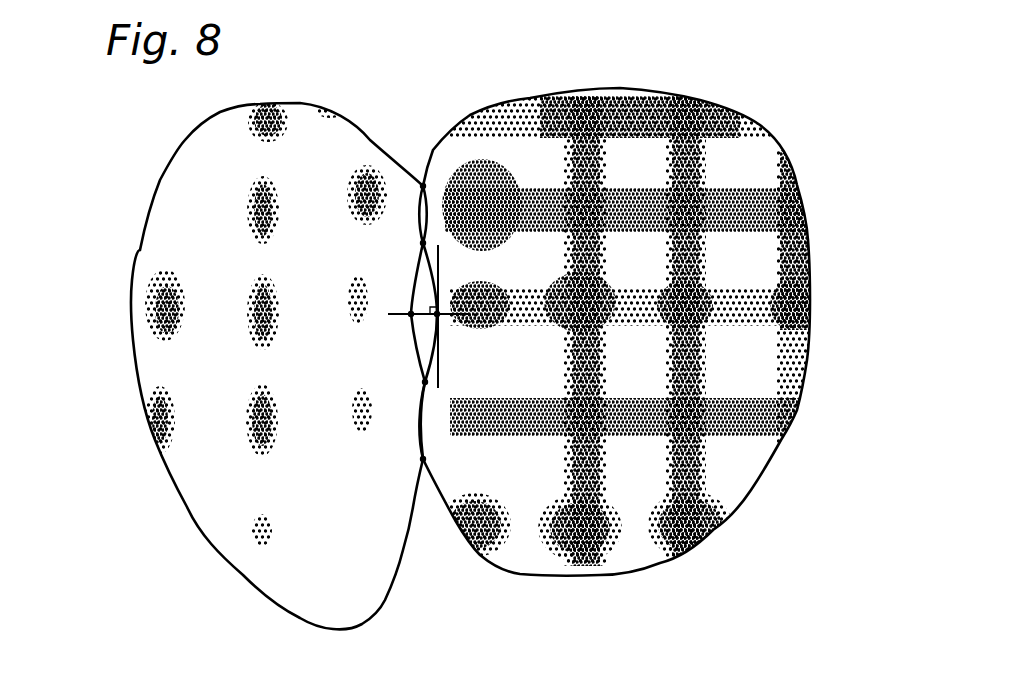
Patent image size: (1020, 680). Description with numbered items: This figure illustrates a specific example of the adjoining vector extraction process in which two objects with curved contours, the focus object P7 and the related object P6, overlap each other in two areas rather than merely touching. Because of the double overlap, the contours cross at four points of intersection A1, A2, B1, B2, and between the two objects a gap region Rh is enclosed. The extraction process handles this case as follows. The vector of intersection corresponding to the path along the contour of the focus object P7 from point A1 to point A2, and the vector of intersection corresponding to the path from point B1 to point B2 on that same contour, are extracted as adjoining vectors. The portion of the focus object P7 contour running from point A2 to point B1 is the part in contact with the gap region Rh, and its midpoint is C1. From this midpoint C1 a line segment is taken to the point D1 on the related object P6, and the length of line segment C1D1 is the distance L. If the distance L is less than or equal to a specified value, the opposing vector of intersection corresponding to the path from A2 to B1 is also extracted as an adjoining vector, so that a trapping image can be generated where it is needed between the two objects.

The related object P6 is at (160, 180).
The focus object P7 is at (796, 187).
The point of intersection A1 is at (408, 187).
The point of intersection A2 is at (408, 245).
The point of intersection B1 is at (409, 383).
The point of intersection B2 is at (407, 460).
The midpoint C1 is at (450, 326).
The point on related object D1 is at (400, 326).
The gap region Rh is at (429, 300).
The distance L is at (427, 316).